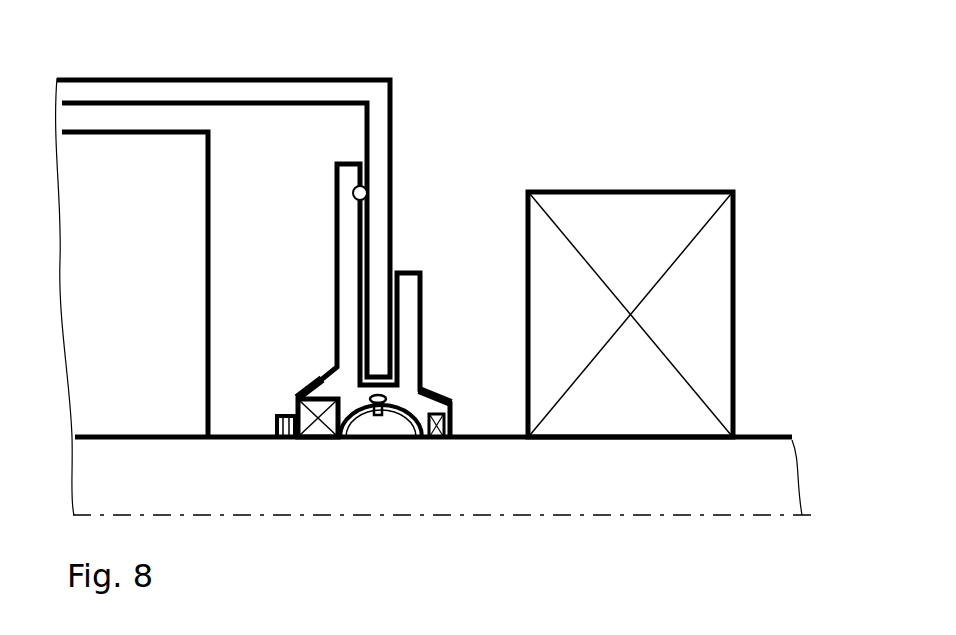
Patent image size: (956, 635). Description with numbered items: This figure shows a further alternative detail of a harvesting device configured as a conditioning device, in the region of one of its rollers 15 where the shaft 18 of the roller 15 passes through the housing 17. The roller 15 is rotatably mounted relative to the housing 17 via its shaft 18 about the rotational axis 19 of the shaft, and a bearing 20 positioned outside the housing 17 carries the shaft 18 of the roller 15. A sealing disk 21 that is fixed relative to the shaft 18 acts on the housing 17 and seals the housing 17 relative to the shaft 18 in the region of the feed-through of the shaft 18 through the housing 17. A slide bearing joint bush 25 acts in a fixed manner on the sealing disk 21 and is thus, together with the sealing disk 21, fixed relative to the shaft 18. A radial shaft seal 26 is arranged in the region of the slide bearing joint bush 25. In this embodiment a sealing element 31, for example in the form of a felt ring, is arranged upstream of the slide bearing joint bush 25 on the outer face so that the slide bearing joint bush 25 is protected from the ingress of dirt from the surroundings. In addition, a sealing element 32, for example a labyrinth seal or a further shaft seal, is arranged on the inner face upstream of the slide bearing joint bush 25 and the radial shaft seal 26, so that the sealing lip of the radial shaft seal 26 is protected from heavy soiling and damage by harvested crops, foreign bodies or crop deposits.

The roller 15 is at (183, 190).
The housing 17 is at (302, 72).
The shaft 18 is at (770, 435).
The rotational axis 19 is at (700, 515).
The bearing 20 is at (645, 218).
The sealing disk 21 is at (427, 298).
The slide bearing joint bush 25 is at (400, 423).
The radial shaft seal 26 is at (318, 427).
The sealing element 31 is at (450, 393).
The sealing element 32 is at (273, 417).